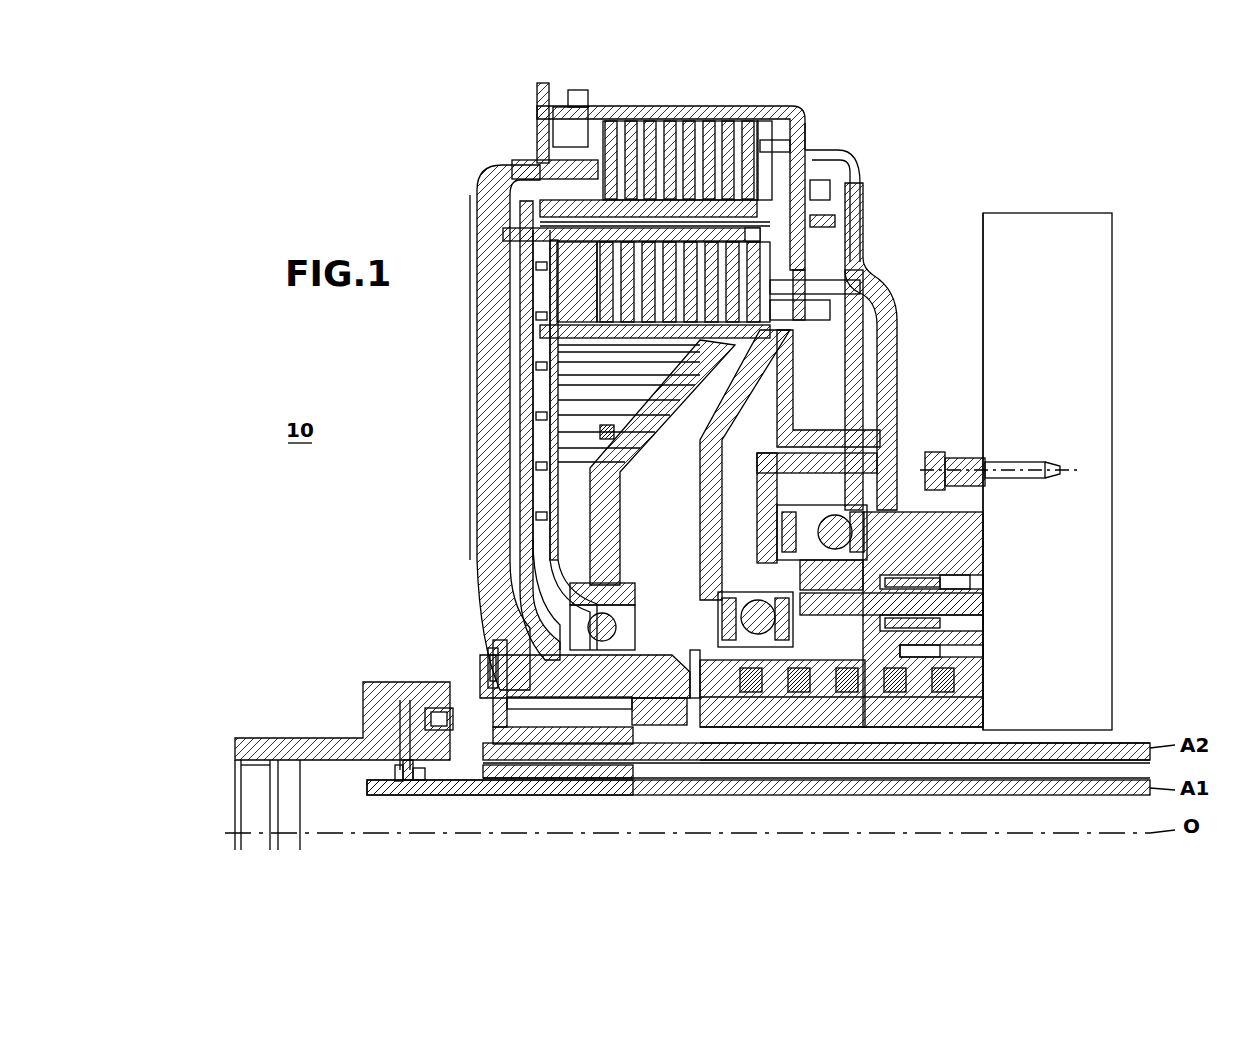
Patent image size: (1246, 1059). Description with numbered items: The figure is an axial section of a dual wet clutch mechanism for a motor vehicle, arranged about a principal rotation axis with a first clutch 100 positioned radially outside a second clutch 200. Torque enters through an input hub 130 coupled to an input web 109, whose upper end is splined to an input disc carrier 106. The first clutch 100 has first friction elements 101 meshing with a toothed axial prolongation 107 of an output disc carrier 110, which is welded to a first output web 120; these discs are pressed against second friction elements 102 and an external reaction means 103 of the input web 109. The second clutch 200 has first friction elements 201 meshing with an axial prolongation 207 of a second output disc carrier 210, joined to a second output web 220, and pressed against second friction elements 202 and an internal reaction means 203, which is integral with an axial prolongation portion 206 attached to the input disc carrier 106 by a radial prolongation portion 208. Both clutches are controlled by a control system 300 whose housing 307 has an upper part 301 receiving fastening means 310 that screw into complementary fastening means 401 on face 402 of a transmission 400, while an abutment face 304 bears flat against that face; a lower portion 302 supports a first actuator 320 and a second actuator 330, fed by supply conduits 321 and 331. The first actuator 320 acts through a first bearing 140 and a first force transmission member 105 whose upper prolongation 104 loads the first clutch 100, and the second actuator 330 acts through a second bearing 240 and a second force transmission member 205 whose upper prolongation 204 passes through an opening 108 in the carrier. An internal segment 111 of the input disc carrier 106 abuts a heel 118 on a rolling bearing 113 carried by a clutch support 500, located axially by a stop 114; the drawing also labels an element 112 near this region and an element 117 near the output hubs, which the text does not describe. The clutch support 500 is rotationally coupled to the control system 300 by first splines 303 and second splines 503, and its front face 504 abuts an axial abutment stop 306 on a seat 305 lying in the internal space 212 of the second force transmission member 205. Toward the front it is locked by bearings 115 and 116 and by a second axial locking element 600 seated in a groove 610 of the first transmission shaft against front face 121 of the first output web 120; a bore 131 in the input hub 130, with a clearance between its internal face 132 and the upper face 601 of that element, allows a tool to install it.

The first clutch 100 is at (720, 140).
The first friction elements 101 is at (620, 135).
The second friction elements 102 is at (683, 135).
The external reaction means 103 is at (600, 140).
The upper prolongation 104 is at (773, 140).
The first force transmission member 105 is at (877, 280).
The input disc carrier 106 is at (800, 137).
The axial prolongation 107 is at (563, 150).
The opening 108 is at (780, 232).
The input web 109 is at (522, 160).
The output disc carrier 110 is at (527, 388).
The internal segment 111 is at (627, 463).
The bearing seat 112 is at (767, 530).
The rolling bearing 113 is at (608, 632).
The stop 114 is at (524, 610).
The bearing 115 is at (522, 705).
The bearing 116 is at (490, 660).
The bearing 117 is at (437, 712).
The heel 118 is at (603, 583).
The first output web 120 is at (452, 795).
The front face 121 is at (404, 740).
The input hub 130 is at (302, 738).
The bore 131 is at (262, 805).
The internal face 132 is at (306, 760).
The first bearing 140 is at (822, 527).
The second clutch 200 is at (595, 261).
The first friction elements 201 is at (603, 340).
The second friction elements 202 is at (622, 340).
The internal reaction means 203 is at (576, 284).
The upper prolongation 204 is at (810, 290).
The second force transmission member 205 is at (847, 340).
The axial prolongation portion 206 is at (527, 231).
The axial prolongation 207 is at (738, 335).
The radial prolongation portion 208 is at (783, 227).
The second output disc carrier 210 is at (550, 463).
The internal space 212 is at (705, 592).
The second output web 220 is at (527, 778).
The second bearing 240 is at (758, 610).
The control system 300 is at (907, 505).
The upper part 301 is at (987, 450).
The lower portion 302 is at (965, 696).
The first splines 303 is at (652, 700).
The abutment face 304 is at (990, 505).
The seat 305 is at (725, 705).
The axial abutment stop 306 is at (692, 705).
The housing 307 is at (970, 594).
The fastening means 310 is at (937, 452).
The first actuator 320 is at (962, 543).
The first hydraulic fluid supply conduit 321 is at (975, 568).
The second actuator 330 is at (950, 660).
The second hydraulic fluid supply conduit 331 is at (975, 638).
The transmission 400 is at (1040, 235).
The complementary fastening means 401 is at (1015, 450).
The face 402 is at (977, 252).
The clutch support 500 is at (640, 672).
The second splines 503 is at (640, 700).
The front face 504 is at (694, 680).
The second axial locking element 600 is at (407, 780).
The upper face 601 is at (398, 781).
The groove 610 is at (418, 780).